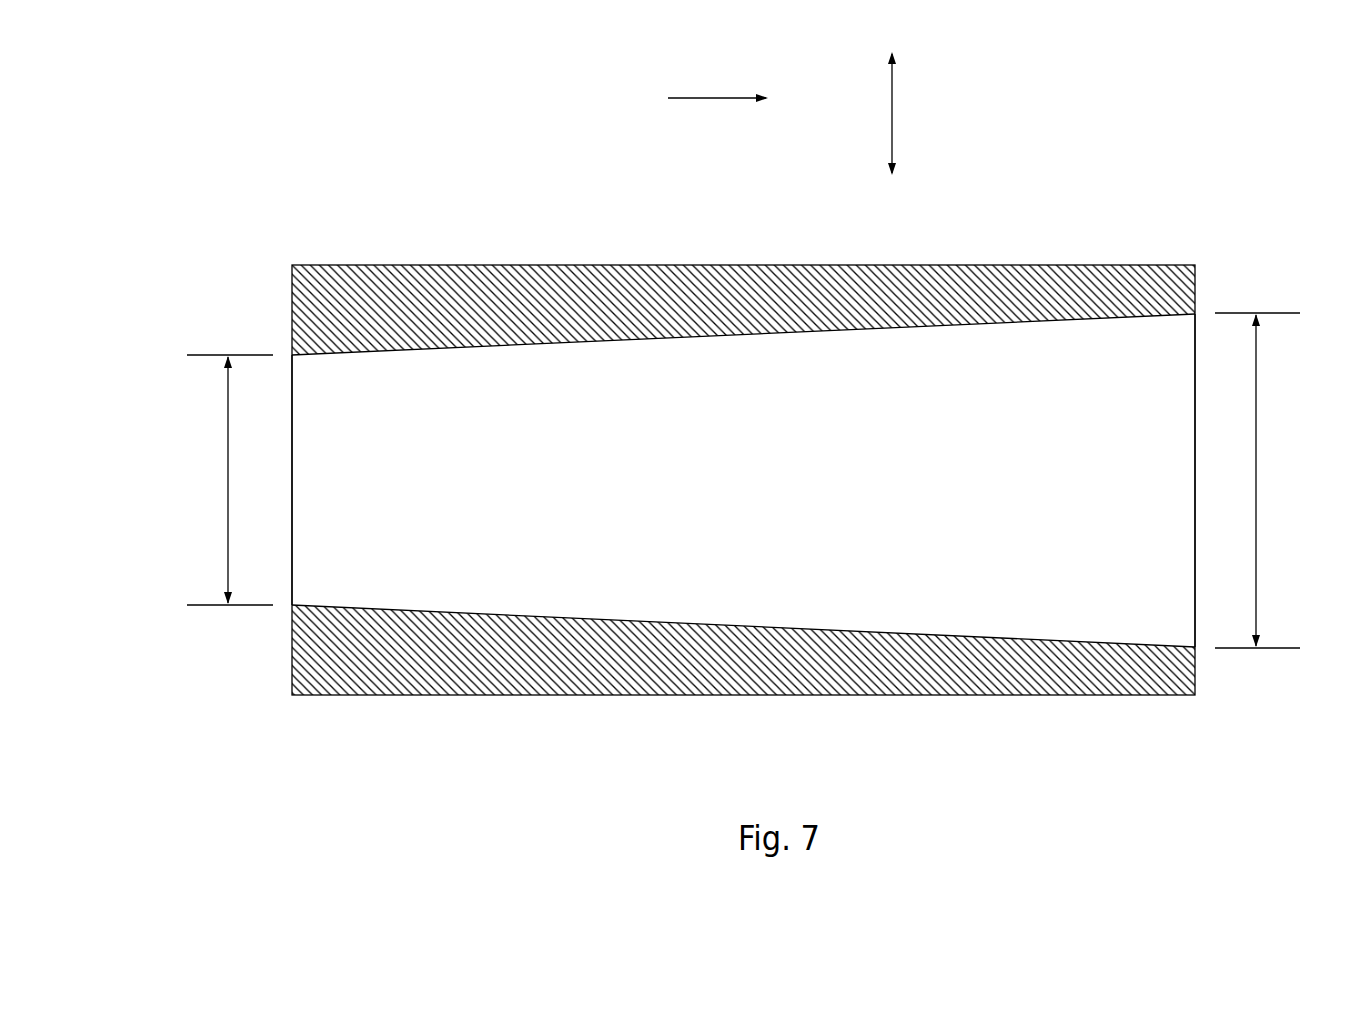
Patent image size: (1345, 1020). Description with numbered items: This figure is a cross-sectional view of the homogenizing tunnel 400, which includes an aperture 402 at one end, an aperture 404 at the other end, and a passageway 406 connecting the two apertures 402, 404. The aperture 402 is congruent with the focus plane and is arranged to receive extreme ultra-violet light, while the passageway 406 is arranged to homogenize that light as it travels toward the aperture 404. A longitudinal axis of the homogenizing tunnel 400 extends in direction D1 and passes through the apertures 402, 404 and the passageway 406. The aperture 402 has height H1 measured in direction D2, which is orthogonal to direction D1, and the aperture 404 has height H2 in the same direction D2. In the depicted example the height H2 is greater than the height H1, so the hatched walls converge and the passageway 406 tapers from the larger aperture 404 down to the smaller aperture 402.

The homogenizing tunnel 400 is at (1092, 156).
The aperture 402 is at (289, 493).
The aperture 404 is at (1198, 493).
The passageway 406 is at (720, 492).
The height H1 is at (228, 508).
The height H2 is at (1256, 508).
The direction D1 is at (715, 98).
The direction D2 is at (892, 113).